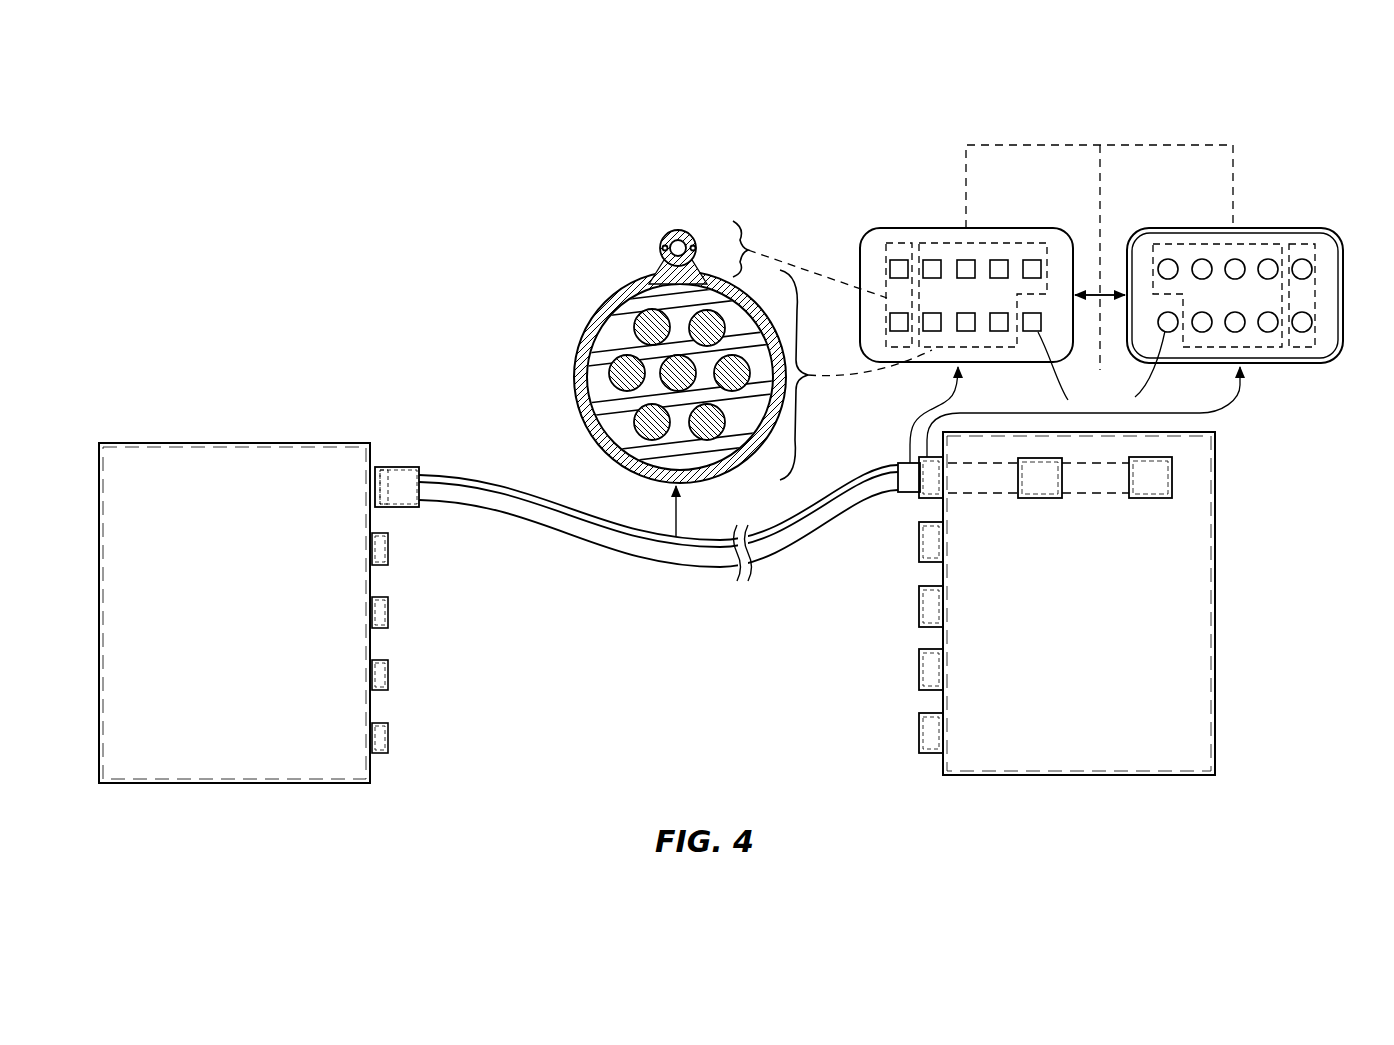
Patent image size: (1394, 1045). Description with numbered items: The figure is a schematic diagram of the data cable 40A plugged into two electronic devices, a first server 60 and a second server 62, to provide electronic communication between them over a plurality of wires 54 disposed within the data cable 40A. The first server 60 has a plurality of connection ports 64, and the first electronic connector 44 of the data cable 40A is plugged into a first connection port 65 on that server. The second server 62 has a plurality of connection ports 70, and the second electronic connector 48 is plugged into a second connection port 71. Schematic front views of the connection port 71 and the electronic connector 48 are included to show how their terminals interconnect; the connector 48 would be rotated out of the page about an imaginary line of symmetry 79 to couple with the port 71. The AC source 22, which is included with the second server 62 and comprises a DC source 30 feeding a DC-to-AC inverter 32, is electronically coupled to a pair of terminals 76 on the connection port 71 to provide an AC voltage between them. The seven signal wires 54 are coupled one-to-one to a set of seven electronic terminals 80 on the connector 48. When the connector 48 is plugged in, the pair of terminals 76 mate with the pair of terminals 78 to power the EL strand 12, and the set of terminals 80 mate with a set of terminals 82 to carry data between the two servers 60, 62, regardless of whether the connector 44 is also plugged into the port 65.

The EL strand 12 is at (688, 214).
The data cable 40A is at (658, 375).
The wires 54 is at (627, 371).
The second electronic connector 48 is at (985, 326).
The pair of terminals 78 is at (900, 243).
The set of electronic terminals 80 is at (1000, 243).
The imaginary line of symmetry 79 is at (1100, 170).
The second connection port 71 is at (1125, 351).
The set of terminals 82 is at (1212, 244).
The pair of terminals 76 is at (1300, 244).
The first electronic device 60 is at (160, 443).
The first connection port 65 is at (383, 472).
The first electronic connector 44 is at (396, 453).
The connection ports 64 is at (396, 552).
The connection ports 70 is at (915, 555).
The second electronic device 62 is at (1213, 696).
The AC source 22 is at (1112, 506).
The DC-to-AC inverter 32 is at (1042, 498).
The DC source 30 is at (1150, 498).